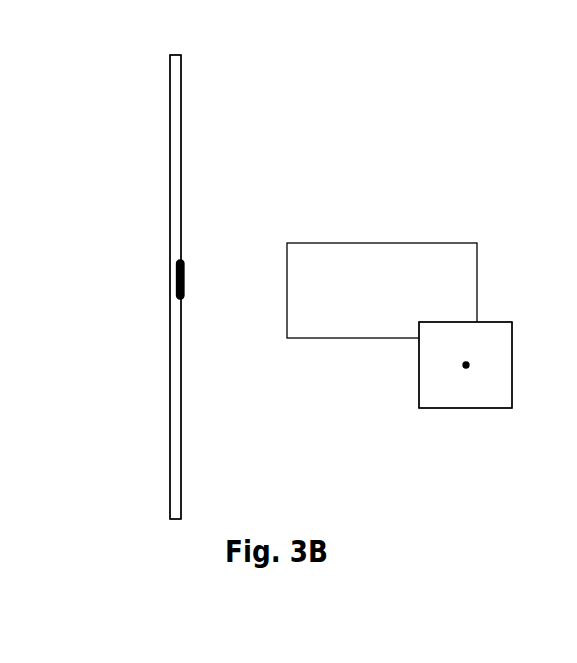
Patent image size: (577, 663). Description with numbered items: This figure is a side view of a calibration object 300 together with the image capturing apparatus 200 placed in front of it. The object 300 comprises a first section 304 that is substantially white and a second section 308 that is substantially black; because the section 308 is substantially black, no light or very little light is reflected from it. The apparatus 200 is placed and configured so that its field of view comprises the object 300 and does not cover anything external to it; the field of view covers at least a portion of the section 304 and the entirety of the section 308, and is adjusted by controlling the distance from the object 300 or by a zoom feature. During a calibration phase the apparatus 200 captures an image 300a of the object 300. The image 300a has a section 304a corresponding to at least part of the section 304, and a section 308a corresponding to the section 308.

The calibration object 300 is at (144, 65).
The first section 304 is at (180, 447).
The second section 308 is at (177, 283).
The image capturing apparatus 200 is at (382, 290).
The section of the image 304a is at (465, 365).
The image 300a is at (496, 408).
The section of the image 308a is at (462, 366).